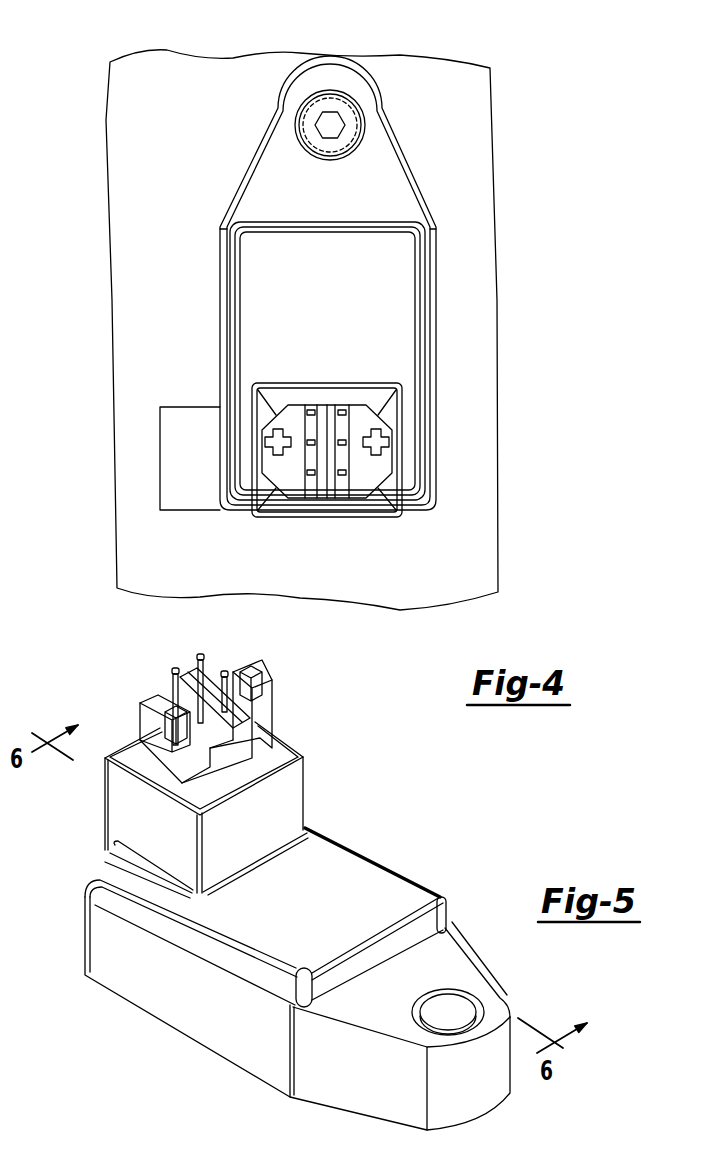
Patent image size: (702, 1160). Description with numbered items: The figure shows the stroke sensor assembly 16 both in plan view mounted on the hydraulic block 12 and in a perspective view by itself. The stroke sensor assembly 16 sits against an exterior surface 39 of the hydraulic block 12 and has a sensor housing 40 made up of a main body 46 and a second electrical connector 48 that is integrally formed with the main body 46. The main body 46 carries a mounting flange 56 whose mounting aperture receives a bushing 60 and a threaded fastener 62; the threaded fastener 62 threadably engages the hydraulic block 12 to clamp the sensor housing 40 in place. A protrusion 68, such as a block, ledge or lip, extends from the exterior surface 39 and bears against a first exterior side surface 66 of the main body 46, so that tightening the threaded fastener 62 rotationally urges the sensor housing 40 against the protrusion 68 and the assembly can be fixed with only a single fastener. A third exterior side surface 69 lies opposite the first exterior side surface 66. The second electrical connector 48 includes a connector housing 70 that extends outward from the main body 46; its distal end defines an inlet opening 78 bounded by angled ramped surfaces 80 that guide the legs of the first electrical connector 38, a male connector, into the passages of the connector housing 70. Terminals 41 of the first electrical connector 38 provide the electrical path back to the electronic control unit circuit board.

In FIG. 4, the hydraulic block 12 is at (137, 62).
In FIG. 4, the stroke sensor assembly 16 is at (426, 198).
In FIG. 5, the first electrical connector 38 is at (272, 688).
In FIG. 4, the exterior surface 39 is at (468, 563).
In FIG. 4, the sensor housing 40 is at (218, 293).
In FIG. 5, the sensor housing 40 is at (398, 862).
In FIG. 5, the terminals 41 is at (177, 686).
In FIG. 4, the main body 46 is at (420, 340).
In FIG. 5, the main body 46 is at (297, 1013).
In FIG. 4, the second electrical connector 48 is at (399, 442).
In FIG. 5, the second electrical connector 48 is at (208, 764).
In FIG. 4, the mounting flange 56 is at (378, 158).
In FIG. 5, the mounting flange 56 is at (493, 1053).
In FIG. 5, the bushing 60 is at (465, 1013).
In FIG. 4, the threaded fastener 62 is at (334, 126).
In FIG. 4, the first exterior side surface 66 is at (218, 331).
In FIG. 4, the protrusion 68 is at (175, 450).
In FIG. 5, the third exterior side surface 69 is at (175, 1000).
In FIG. 5, the connector housing 70 is at (117, 792).
In FIG. 4, the inlet opening 78 is at (368, 393).
In FIG. 5, the inlet opening 78 is at (211, 709).
In FIG. 4, the ramped surfaces 80 is at (265, 410).
In FIG. 5, the ramped surfaces 80 is at (130, 758).